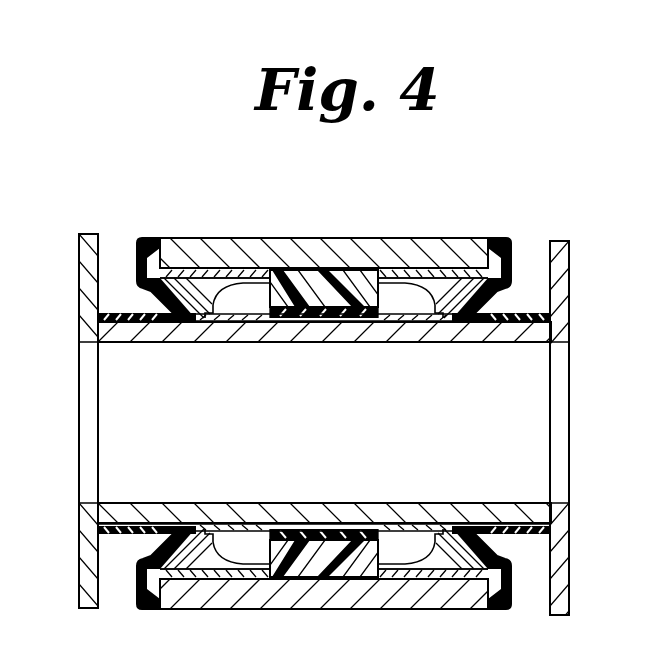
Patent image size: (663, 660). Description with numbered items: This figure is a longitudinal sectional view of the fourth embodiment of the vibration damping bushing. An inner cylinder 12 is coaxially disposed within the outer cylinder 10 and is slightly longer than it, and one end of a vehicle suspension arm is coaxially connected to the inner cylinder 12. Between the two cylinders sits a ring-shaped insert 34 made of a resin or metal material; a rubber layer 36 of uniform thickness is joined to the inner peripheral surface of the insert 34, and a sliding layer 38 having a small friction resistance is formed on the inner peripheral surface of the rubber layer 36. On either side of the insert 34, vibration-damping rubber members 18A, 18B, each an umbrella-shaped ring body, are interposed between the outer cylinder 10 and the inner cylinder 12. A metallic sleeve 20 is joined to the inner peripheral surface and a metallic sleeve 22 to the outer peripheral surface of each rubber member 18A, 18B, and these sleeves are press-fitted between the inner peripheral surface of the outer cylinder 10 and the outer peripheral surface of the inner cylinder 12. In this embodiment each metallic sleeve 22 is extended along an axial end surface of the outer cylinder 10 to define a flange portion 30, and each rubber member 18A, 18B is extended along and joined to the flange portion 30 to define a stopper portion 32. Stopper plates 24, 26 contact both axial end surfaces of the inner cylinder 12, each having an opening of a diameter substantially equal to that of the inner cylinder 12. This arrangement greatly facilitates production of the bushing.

The outer cylinder 10 is at (252, 250).
The inner cylinder 12 is at (119, 344).
The vibration-damping rubber member 18A is at (195, 314).
The vibration-damping rubber member 18B is at (443, 318).
The metallic sleeve 20 is at (176, 326).
The metallic sleeve 22 is at (198, 270).
The stopper plate 24 is at (88, 285).
The stopper plate 26 is at (562, 285).
The flange portion 30 is at (153, 238).
The stopper portion 32 is at (137, 240).
The insert 34 is at (330, 290).
The rubber layer 36 is at (340, 318).
The sliding layer 38 is at (300, 322).